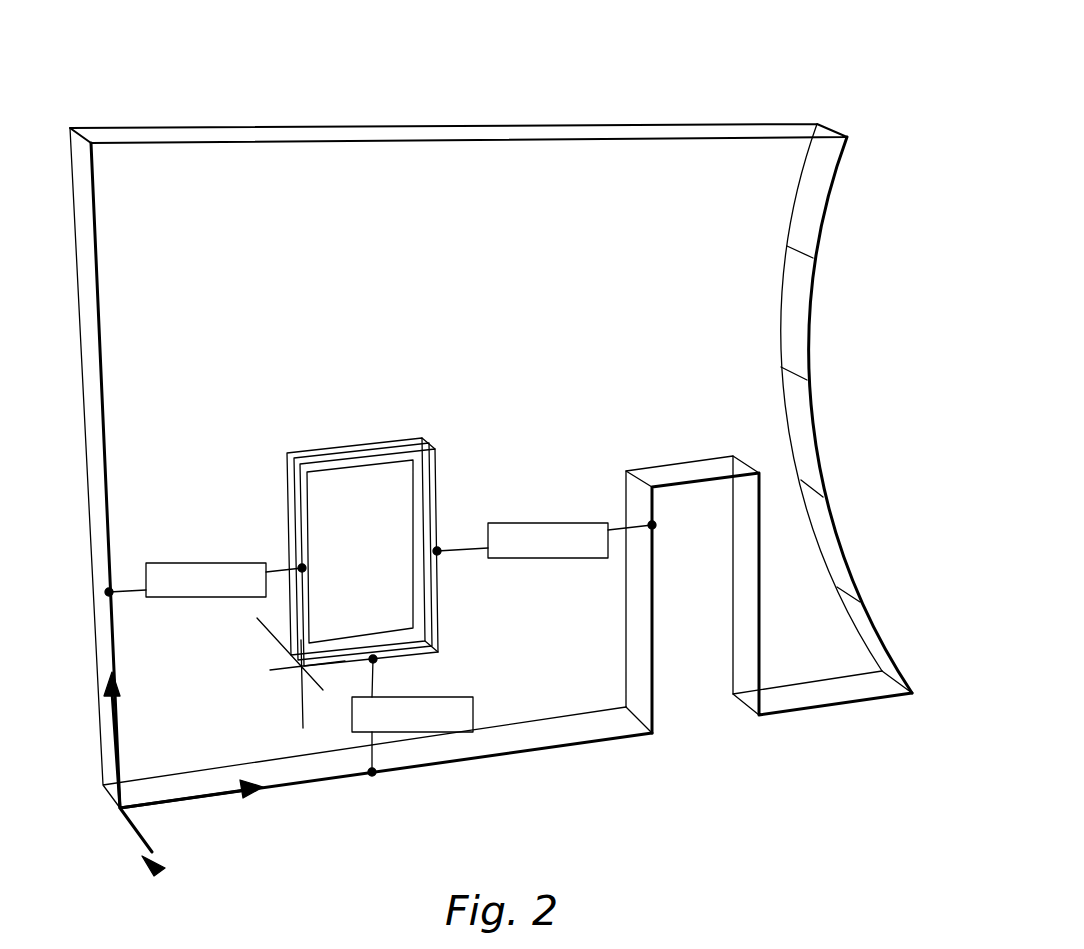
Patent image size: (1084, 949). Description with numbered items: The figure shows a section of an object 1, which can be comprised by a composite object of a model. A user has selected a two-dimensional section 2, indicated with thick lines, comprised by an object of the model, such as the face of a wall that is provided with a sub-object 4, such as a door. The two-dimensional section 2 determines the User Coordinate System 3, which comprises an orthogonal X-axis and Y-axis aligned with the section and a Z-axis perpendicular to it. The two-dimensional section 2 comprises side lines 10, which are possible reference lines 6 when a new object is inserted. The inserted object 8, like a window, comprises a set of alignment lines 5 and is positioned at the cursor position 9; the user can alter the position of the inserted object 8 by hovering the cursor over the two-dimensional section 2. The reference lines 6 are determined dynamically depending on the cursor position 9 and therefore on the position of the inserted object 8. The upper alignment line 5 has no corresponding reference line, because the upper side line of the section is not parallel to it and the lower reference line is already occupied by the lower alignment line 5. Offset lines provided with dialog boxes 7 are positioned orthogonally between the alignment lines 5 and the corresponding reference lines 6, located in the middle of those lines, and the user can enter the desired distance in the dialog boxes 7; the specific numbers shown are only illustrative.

The object 1 is at (878, 85).
The 2D section 2 is at (740, 305).
The User Coordinate System 3 is at (118, 812).
The sub-object 4 is at (711, 618).
The alignment lines 5 is at (362, 525).
The reference lines 6 is at (106, 372).
The dialog boxes 7 is at (208, 563).
The inserted object 8 is at (378, 562).
The cursor position 9 is at (298, 672).
The side lines 10 is at (437, 128).